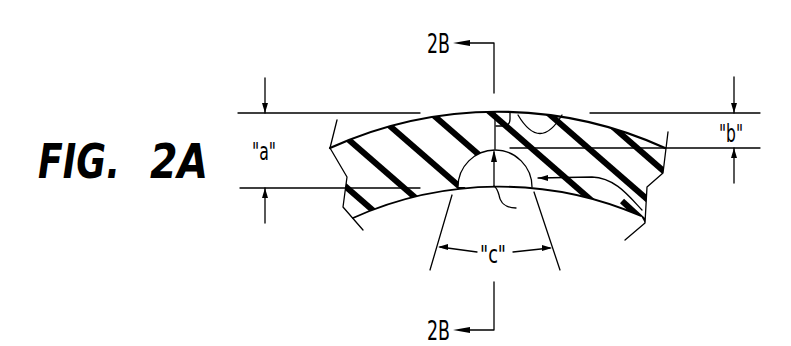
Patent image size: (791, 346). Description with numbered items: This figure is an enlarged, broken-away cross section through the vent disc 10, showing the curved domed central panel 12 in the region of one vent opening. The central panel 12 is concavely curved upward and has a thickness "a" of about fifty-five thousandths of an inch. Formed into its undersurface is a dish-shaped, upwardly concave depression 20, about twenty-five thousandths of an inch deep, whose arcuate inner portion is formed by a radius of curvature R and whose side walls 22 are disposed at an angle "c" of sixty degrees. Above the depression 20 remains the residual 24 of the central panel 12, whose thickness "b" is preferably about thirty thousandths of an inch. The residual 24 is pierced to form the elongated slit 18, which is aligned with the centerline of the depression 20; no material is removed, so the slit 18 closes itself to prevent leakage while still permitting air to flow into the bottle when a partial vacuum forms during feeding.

The vent disc 10 is at (494, 124).
The central panel 12 is at (478, 112).
The slit 18 is at (510, 113).
The depression 20 is at (638, 204).
The side walls 22 is at (445, 172).
The residual 24 is at (553, 124).